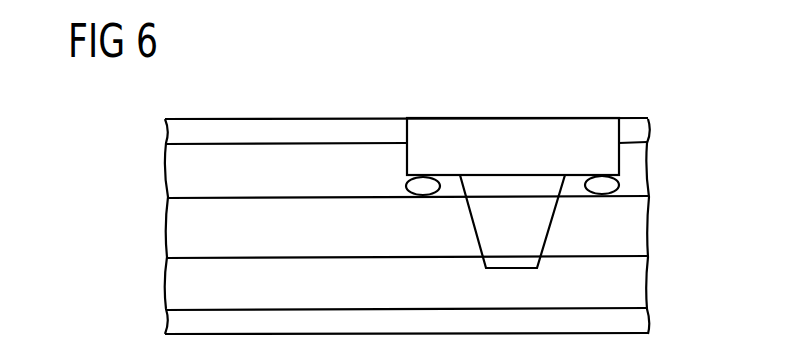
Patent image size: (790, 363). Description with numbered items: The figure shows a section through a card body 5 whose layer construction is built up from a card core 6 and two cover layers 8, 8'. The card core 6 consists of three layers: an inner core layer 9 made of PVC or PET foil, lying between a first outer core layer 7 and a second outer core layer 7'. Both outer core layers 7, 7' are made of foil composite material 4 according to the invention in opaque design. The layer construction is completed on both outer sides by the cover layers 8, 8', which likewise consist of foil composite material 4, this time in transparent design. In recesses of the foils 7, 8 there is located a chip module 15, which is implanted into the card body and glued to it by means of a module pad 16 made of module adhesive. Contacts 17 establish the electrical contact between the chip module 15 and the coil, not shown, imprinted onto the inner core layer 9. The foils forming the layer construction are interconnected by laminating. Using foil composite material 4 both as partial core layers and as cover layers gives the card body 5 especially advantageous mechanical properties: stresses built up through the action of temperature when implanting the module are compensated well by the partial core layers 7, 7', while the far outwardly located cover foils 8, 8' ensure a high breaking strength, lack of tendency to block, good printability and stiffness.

The foil composite material 4 is at (120, 132).
The card body 5 is at (592, 94).
The card core 6 is at (153, 143).
The first outer core layer 7 is at (431, 174).
The second outer core layer 7' is at (434, 285).
The cover layer 8 is at (430, 130).
The cover layer 8' is at (433, 319).
The inner core layer 9 is at (643, 212).
The chip module 15 is at (498, 127).
The module pad 16 is at (530, 258).
The contacts 17 is at (422, 203).